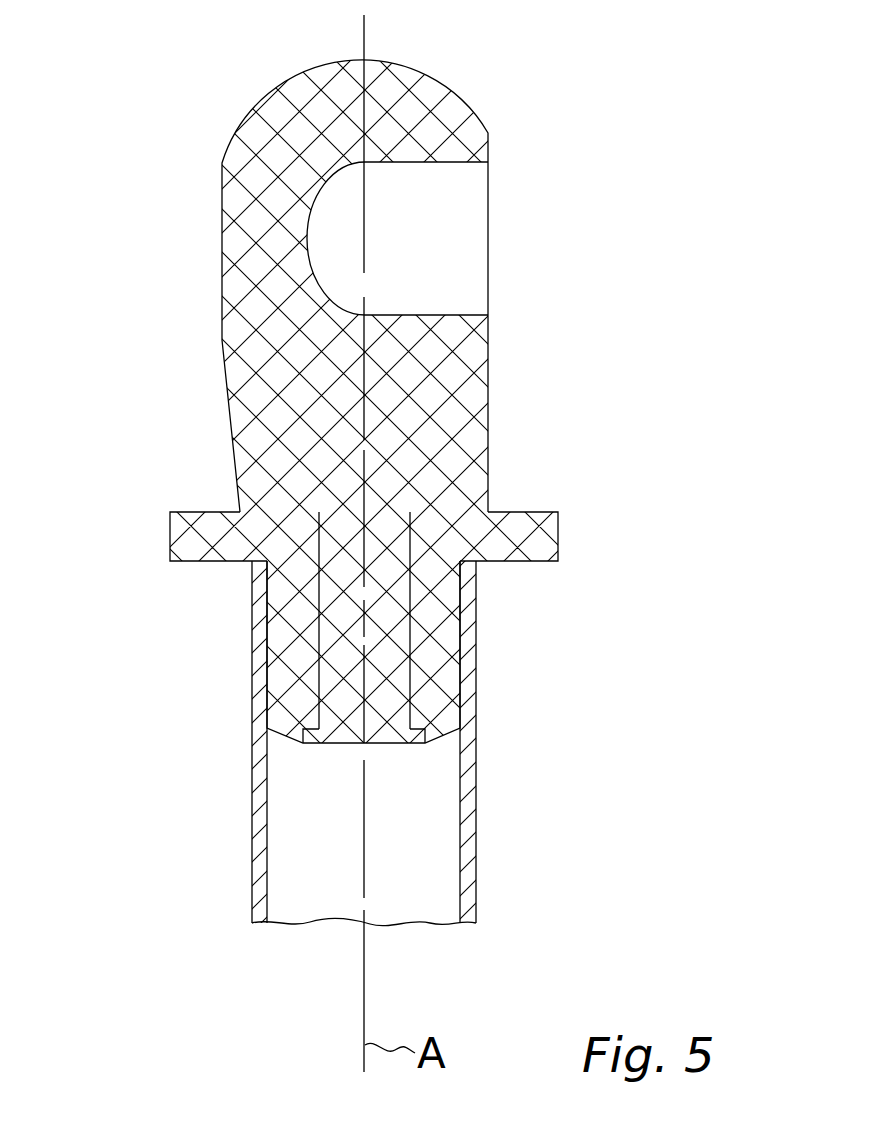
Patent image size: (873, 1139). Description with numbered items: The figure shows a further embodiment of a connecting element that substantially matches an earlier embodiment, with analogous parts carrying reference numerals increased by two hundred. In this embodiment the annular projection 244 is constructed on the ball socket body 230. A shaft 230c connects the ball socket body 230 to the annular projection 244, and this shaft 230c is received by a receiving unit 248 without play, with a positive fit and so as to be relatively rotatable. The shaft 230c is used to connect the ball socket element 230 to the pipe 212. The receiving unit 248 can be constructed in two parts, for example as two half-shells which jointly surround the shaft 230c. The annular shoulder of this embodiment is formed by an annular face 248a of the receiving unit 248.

The ball socket body 230 is at (427, 88).
The receiving unit 248 is at (545, 520).
The shaft 230c is at (337, 613).
The annular projection 244 is at (313, 745).
The annular face 248a is at (426, 715).
The pipe 212 is at (470, 835).